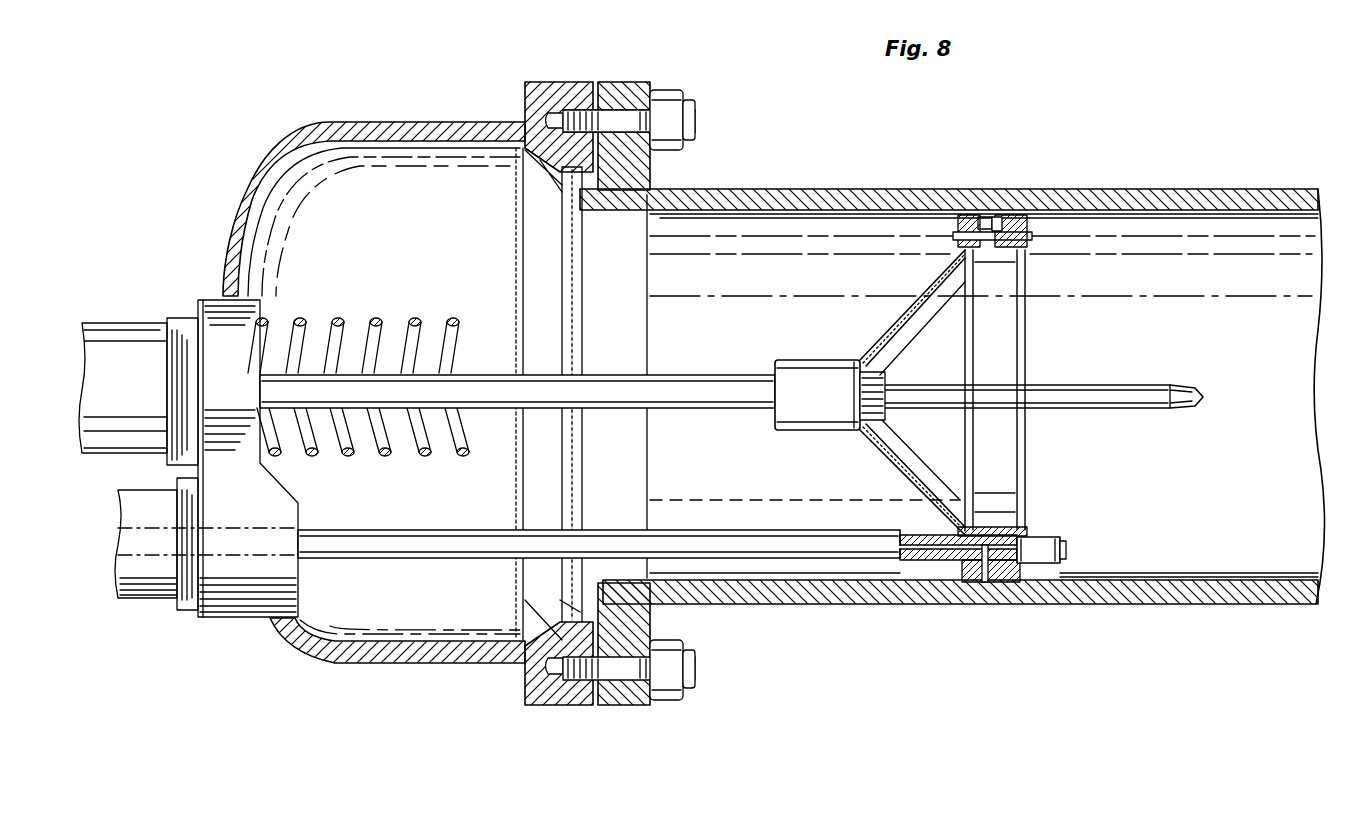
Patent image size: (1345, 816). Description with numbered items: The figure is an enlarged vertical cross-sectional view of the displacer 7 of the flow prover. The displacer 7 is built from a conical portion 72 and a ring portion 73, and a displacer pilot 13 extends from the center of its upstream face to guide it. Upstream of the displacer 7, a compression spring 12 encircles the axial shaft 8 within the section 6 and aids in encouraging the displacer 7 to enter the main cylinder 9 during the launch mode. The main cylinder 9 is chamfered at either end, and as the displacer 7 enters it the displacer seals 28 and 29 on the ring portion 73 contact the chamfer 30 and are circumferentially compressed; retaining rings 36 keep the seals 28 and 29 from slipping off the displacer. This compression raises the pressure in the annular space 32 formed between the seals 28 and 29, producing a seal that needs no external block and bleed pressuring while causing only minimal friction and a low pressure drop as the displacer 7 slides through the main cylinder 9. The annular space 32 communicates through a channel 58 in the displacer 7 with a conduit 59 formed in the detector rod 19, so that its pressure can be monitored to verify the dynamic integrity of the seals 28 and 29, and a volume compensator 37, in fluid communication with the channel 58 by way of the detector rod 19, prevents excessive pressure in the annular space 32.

The section 6 is at (313, 128).
The displacer 7 is at (1048, 342).
The axial shaft 8 is at (815, 422).
The main cylinder 9 is at (1115, 607).
The compression spring 12 is at (376, 320).
The displacer pilot 13 is at (1170, 385).
The detector rod 19 is at (768, 563).
The displacer seal 28 is at (985, 215).
The displacer seal 29 is at (1005, 215).
The chamfer 30 is at (685, 607).
The annular space 32 is at (990, 570).
The retaining ring 36 is at (937, 197).
The volume compensator 37 is at (1066, 550).
The channel 58 is at (1025, 550).
The conduit 59 is at (918, 562).
The conical portion 72 is at (905, 320).
The ring portion 73 is at (1003, 270).